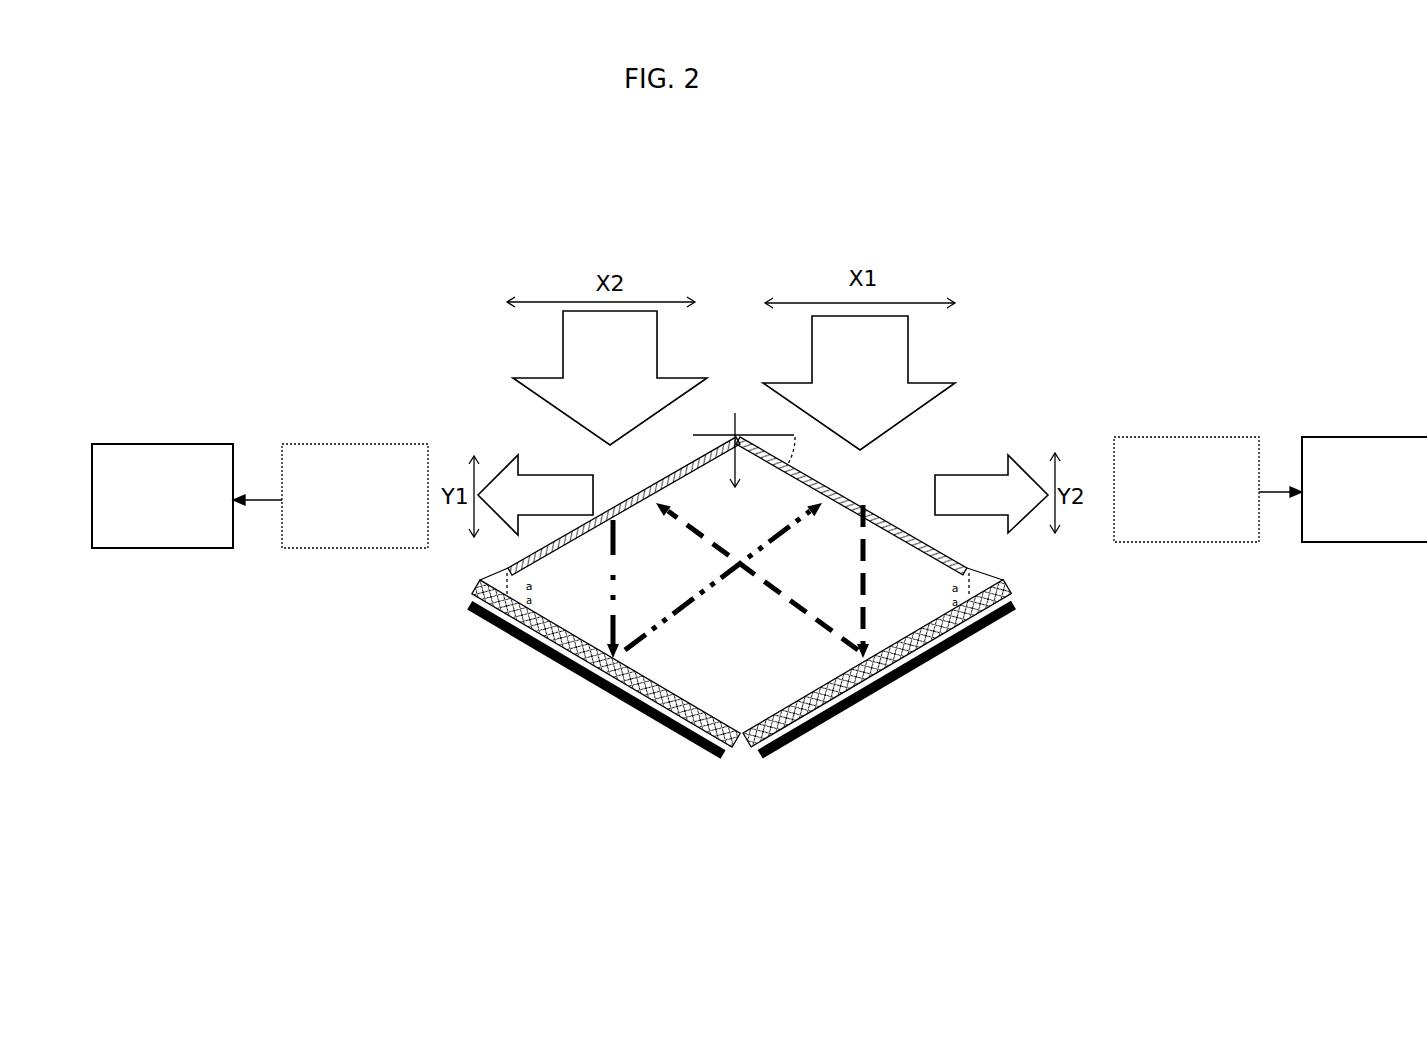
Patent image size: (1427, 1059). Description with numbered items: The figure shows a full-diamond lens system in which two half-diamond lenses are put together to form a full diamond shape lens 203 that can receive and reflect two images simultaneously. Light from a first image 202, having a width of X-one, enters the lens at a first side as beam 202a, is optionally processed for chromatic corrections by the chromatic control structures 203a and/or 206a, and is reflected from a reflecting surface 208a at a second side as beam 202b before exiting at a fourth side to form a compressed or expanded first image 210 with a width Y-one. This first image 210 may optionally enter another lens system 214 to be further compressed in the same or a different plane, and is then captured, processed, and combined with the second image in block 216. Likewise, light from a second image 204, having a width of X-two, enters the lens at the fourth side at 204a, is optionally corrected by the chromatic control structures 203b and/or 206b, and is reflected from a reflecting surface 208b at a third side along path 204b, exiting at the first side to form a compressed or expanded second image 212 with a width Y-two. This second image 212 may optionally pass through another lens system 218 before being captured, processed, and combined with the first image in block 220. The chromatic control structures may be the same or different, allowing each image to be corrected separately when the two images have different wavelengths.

The first image 202 is at (859, 383).
The beam 202a is at (869, 510).
The beam 202b is at (762, 580).
The full diamond shape lens 203 is at (744, 437).
The chromatic control structure 203a is at (782, 471).
The chromatic control structure 203b is at (707, 471).
The second image 204 is at (610, 378).
The fourth side entry 204a is at (610, 508).
The reflected second-image beam 204b is at (714, 580).
The chromatic control structure 206a is at (1012, 583).
The chromatic control structure 206b is at (474, 582).
The reflecting surface 208a is at (1005, 609).
The reflecting surface 208b is at (486, 612).
The compressed or expanded first image 210 is at (535, 488).
The compressed or expanded second image 212 is at (991, 489).
The lens system 214 is at (330, 496).
The block 216 is at (162, 496).
The lens system 218 is at (1208, 489).
The block 220 is at (1364, 489).